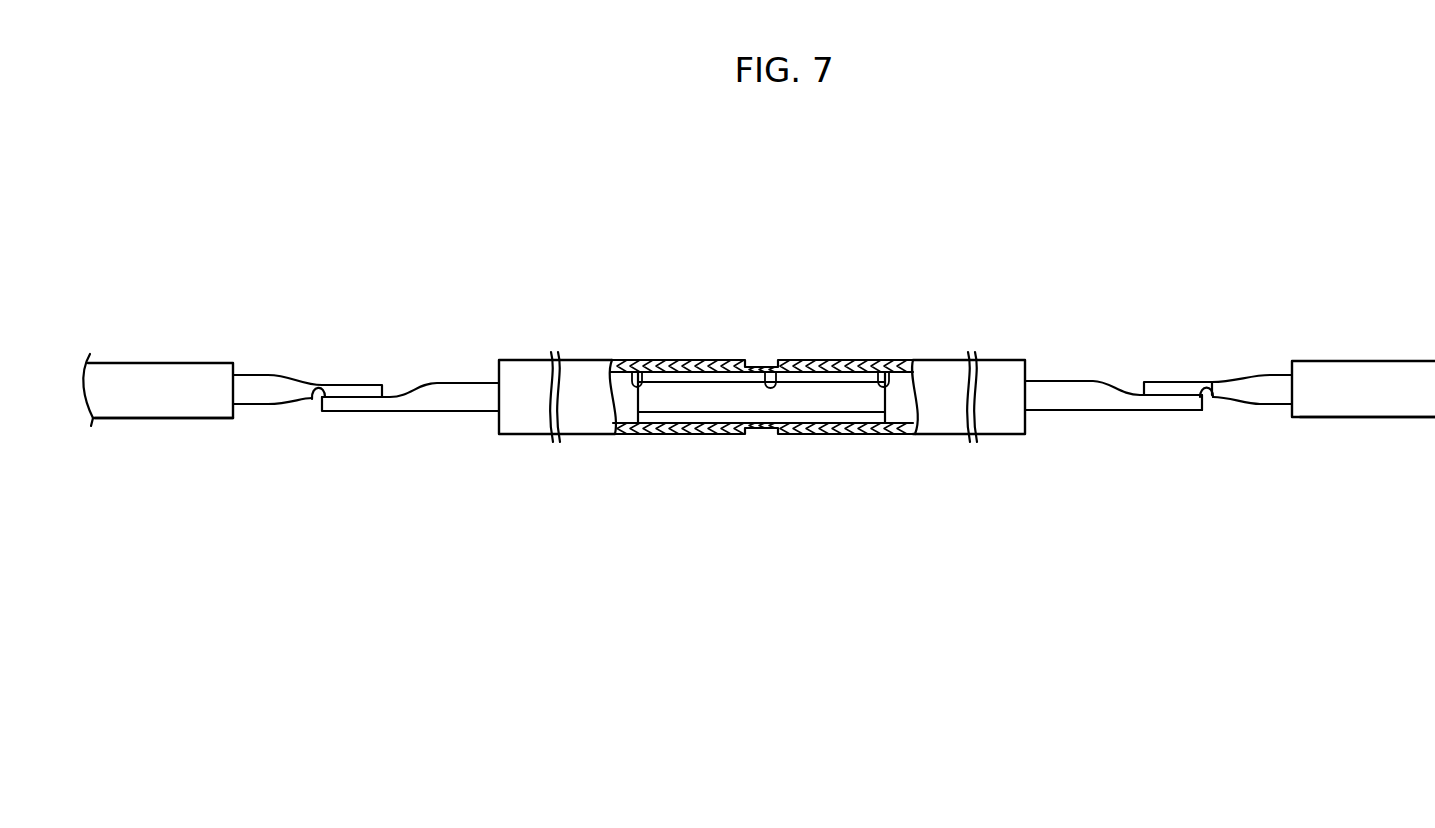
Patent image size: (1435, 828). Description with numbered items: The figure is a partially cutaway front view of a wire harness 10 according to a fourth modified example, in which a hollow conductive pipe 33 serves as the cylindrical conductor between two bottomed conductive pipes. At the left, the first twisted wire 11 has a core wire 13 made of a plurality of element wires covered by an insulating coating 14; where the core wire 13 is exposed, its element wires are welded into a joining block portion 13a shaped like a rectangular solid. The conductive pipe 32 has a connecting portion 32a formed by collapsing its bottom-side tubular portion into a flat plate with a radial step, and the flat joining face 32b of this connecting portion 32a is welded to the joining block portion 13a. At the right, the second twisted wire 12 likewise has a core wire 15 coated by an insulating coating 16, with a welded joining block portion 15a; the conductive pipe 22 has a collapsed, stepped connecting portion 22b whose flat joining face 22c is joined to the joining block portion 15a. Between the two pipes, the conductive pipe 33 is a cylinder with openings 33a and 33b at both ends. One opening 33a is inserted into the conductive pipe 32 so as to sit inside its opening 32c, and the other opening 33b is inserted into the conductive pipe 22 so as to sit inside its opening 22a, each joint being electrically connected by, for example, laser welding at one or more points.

The wire harness 10 is at (283, 121).
The first twisted wire 11 is at (183, 363).
The second twisted wire 12 is at (1390, 361).
The core wire 13 is at (268, 376).
The joining block portion 13a is at (347, 390).
The insulating coating 14 is at (186, 405).
The core wire 15 is at (1275, 375).
The joining block portion 15a is at (1180, 388).
The insulating coating 16 is at (1390, 400).
The conductive pipe 22 is at (1000, 434).
The opening 22a is at (770, 372).
The connecting portion 22b is at (1125, 402).
The joining face 22c is at (1208, 398).
The conductive pipe 32 is at (525, 440).
The connecting portion 32a is at (452, 405).
The joining face 32b is at (314, 400).
The opening 32c is at (752, 418).
The conductive pipe 33 is at (700, 425).
The opening 33a is at (633, 372).
The opening 33b is at (888, 372).